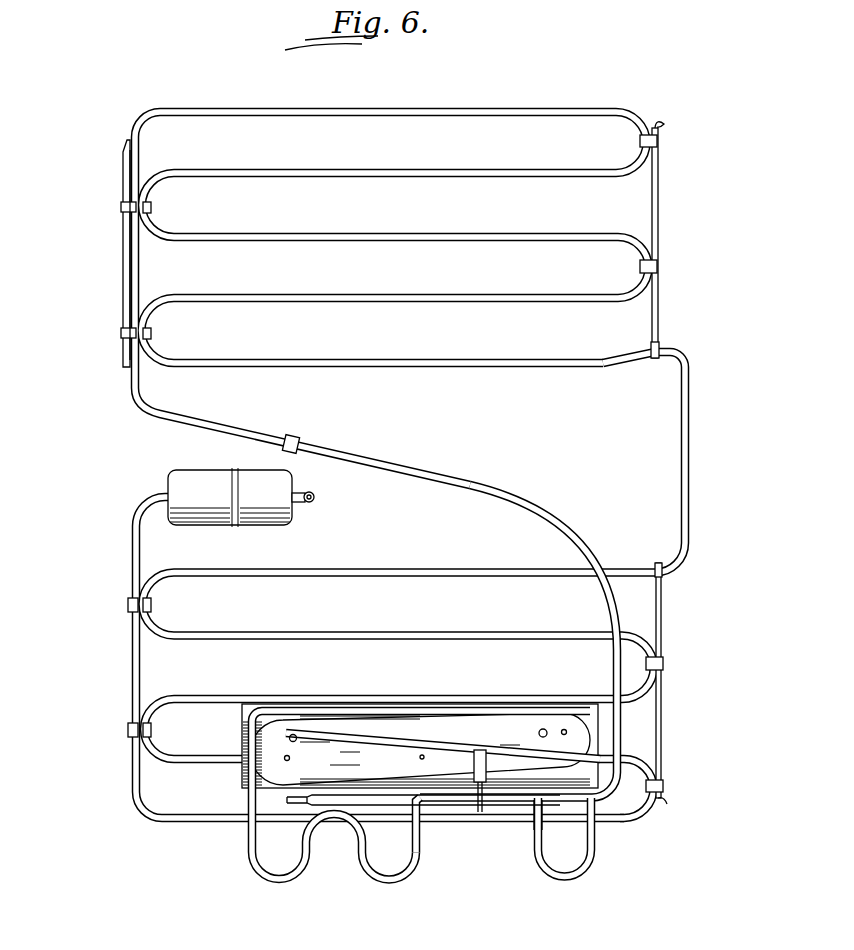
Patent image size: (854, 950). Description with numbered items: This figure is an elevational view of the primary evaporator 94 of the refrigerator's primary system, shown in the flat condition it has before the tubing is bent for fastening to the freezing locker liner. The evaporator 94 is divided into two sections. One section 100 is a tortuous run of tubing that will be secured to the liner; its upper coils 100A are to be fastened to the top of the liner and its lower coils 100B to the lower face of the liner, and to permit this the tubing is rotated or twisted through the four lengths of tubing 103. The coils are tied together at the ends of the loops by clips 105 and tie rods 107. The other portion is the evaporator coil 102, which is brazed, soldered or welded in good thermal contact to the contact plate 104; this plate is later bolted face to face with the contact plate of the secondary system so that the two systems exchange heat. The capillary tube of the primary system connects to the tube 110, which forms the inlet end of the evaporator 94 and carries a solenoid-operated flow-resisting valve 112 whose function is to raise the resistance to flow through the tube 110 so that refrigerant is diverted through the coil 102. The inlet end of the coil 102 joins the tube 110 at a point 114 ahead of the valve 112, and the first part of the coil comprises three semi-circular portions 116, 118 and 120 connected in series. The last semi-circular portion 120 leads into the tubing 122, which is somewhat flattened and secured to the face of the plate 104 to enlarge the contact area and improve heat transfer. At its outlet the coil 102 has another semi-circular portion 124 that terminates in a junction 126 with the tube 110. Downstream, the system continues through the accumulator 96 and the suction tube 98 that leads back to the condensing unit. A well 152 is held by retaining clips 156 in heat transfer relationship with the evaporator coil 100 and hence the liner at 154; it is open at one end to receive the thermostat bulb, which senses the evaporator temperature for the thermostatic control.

The coils 100A is at (487, 131).
The coils 100B is at (352, 573).
The tortuous tubing section 100 is at (368, 696).
The lengths of tubing 103 is at (426, 352).
The primary evaporator 94 is at (448, 432).
The accumulator 96 is at (197, 487).
The suction tube 98 is at (315, 502).
The evaporator coil 102 is at (350, 714).
The contact plate 104 is at (478, 732).
The clips 105 is at (661, 147).
The tie rods 107 is at (660, 205).
The tube 110 is at (619, 727).
The solenoid-operated flow-resisting valve 112 is at (490, 812).
The connection point 114 is at (420, 830).
The semi-circular portion 116 is at (390, 882).
The semi-circular portion 118 is at (307, 830).
The semi-circular portion 120 is at (293, 880).
The tubing 122 is at (346, 776).
The semi-circular portion 124 is at (558, 878).
The junction 126 is at (532, 827).
The well 152 is at (120, 165).
The liner contact location 154 is at (128, 268).
The retaining clips 156 is at (121, 208).